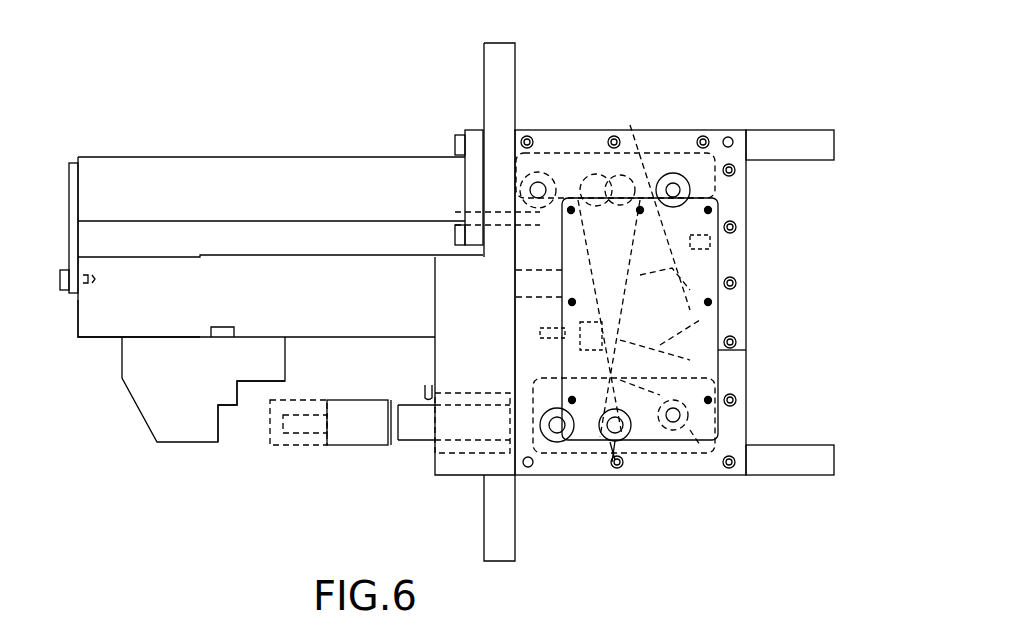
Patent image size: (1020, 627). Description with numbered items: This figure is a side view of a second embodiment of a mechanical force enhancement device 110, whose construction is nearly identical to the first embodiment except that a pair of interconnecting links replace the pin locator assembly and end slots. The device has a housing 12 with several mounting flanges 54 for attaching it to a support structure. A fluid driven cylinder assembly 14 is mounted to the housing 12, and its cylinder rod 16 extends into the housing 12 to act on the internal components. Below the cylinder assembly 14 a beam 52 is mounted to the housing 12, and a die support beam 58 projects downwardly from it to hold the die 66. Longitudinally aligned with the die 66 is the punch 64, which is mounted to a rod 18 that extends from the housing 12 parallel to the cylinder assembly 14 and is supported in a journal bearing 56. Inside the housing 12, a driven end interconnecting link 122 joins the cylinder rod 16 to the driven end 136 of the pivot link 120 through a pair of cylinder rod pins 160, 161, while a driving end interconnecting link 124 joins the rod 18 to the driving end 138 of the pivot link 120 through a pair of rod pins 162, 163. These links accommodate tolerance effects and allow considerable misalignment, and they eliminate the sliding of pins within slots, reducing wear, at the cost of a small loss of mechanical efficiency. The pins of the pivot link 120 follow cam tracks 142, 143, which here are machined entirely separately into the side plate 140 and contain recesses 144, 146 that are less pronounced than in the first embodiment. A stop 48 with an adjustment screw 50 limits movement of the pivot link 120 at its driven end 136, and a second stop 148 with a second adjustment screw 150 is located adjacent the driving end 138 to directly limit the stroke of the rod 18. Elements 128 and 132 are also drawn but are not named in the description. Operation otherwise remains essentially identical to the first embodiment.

The mechanical force enhancement device 110 is at (360, 115).
The fluid driven cylinder assembly 14 is at (267, 157).
The cylinder rod 16 is at (505, 150).
The housing 12 is at (760, 316).
The mounting flanges 54 is at (512, 63).
The cylinder rod pin 160 is at (559, 130).
The cylinder rod pin 161 is at (597, 135).
The driven end interconnecting link 122 is at (470, 212).
The driven end of the pivot link 136 is at (718, 191).
The adjustment screw 50 is at (745, 247).
The cam track 142 is at (746, 268).
The pivot link 120 is at (733, 298).
The side plate 140 is at (760, 352).
The cam track 143 is at (705, 378).
The rod pin 163 is at (705, 420).
The stop 48 is at (640, 319).
The recess 144 is at (510, 277).
The guide 128 is at (510, 304).
The link arm 132 is at (685, 332).
The second adjustment screw 150 is at (505, 362).
The second stop 148 is at (611, 384).
The recess 146 is at (684, 440).
The rod pin 162 is at (625, 462).
The driving end interconnecting link 124 is at (660, 475).
The driving end of the pivot link 138 is at (621, 489).
The beam 52 is at (128, 318).
The die support beam 58 is at (167, 427).
The die 66 is at (207, 432).
The punch 64 is at (303, 425).
The rod 18 is at (418, 428).
The journal bearing 56 is at (458, 450).